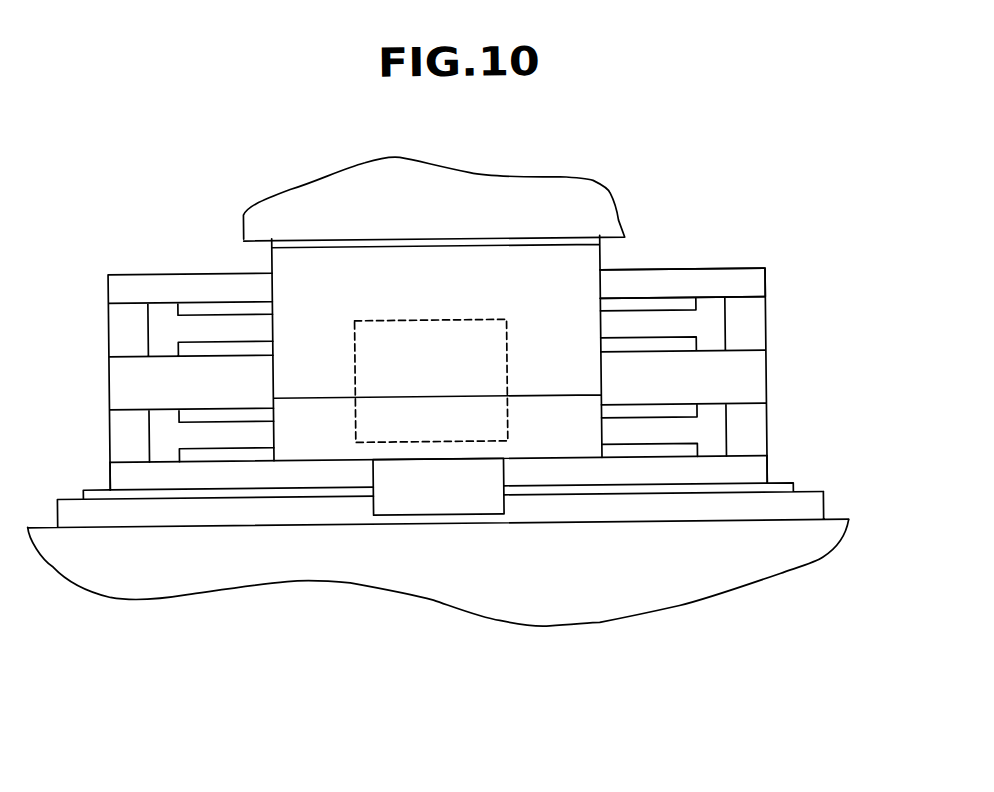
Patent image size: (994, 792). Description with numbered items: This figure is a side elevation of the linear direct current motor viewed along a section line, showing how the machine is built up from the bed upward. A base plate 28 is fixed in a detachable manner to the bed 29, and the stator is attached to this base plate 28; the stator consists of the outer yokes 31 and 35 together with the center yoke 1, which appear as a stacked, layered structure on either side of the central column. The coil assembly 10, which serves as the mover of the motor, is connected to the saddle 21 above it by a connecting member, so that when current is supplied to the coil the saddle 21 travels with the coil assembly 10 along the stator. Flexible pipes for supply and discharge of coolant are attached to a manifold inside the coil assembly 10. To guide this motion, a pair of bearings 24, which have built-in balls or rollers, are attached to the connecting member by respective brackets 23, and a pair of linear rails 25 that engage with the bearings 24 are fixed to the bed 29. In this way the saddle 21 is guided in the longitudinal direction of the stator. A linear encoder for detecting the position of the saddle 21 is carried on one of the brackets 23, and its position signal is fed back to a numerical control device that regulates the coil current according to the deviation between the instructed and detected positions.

The center yoke 1 is at (763, 378).
The coil assembly 10 is at (356, 320).
The saddle 21 is at (575, 178).
The bracket 23 is at (584, 258).
The bearing 24 is at (412, 505).
The linear rail 25 is at (822, 521).
The base plate 28 is at (780, 489).
The bed 29 is at (704, 588).
The outer yoke 31 is at (753, 476).
The outer yoke 35 is at (757, 282).